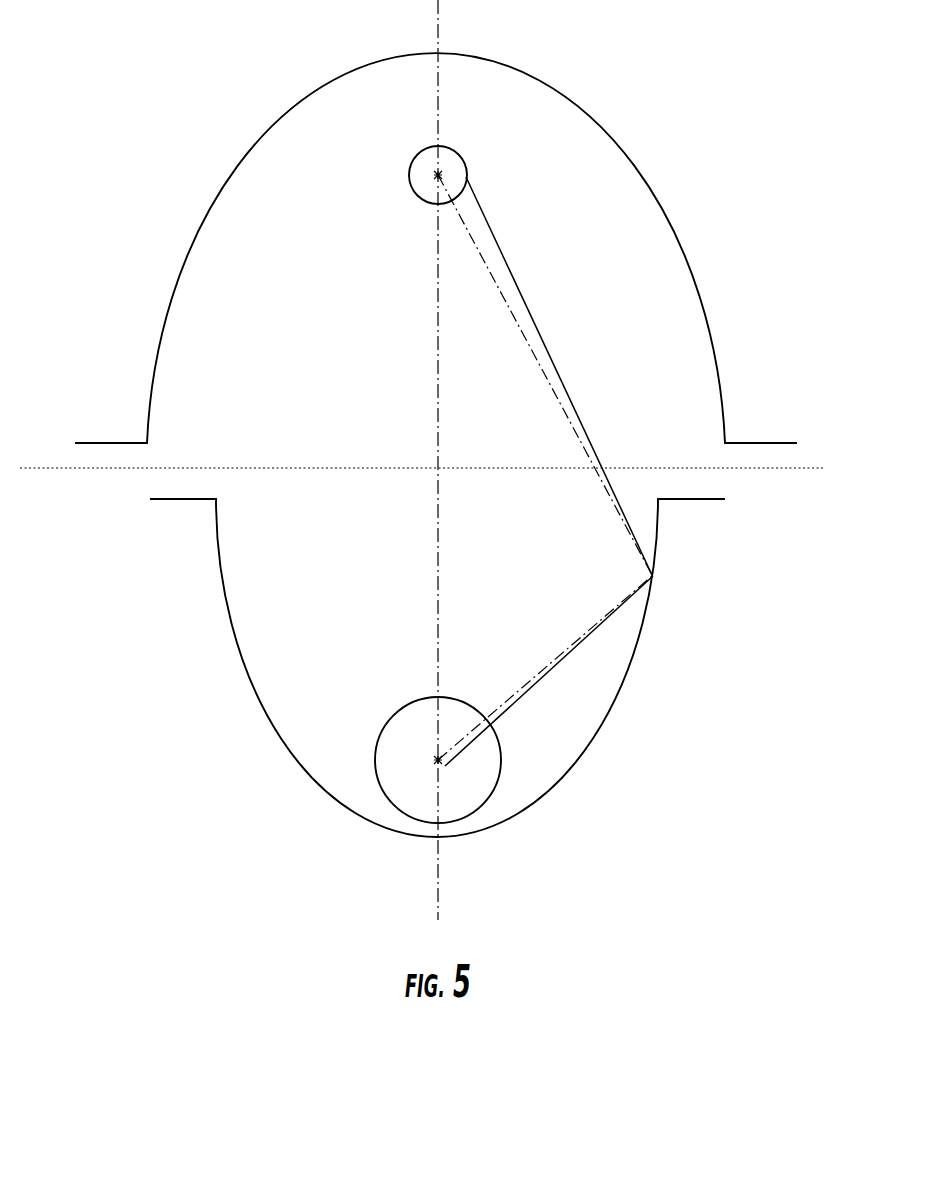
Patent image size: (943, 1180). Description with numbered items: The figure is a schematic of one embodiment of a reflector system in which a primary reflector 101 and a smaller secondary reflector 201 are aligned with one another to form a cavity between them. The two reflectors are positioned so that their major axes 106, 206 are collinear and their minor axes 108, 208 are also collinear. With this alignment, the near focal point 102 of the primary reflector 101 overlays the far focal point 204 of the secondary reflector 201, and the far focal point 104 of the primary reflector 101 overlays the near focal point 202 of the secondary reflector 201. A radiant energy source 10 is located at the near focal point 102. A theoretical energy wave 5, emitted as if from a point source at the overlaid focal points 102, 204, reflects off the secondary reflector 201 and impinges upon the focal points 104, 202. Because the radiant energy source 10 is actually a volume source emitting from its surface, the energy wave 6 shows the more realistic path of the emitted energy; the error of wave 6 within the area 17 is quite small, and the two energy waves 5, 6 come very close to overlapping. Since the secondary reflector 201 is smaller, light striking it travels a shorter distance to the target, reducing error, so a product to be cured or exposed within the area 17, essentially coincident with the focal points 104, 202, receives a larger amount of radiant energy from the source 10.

The theoretical energy wave 5 is at (477, 247).
The energy wave 6 is at (553, 355).
The radiant energy source 10 is at (420, 150).
The area 17 is at (385, 797).
The primary reflector 101 is at (602, 128).
The secondary reflector 201 is at (275, 728).
The near focal point 102 is at (511, 90).
The far focal point 204 is at (467, 170).
The far focal point 104 is at (357, 686).
The near focal point 202 is at (427, 757).
The major axis 106 is at (365, 460).
The major axis 206 is at (437, 450).
The minor axis 108 is at (421, 525).
The minor axis 208 is at (302, 470).